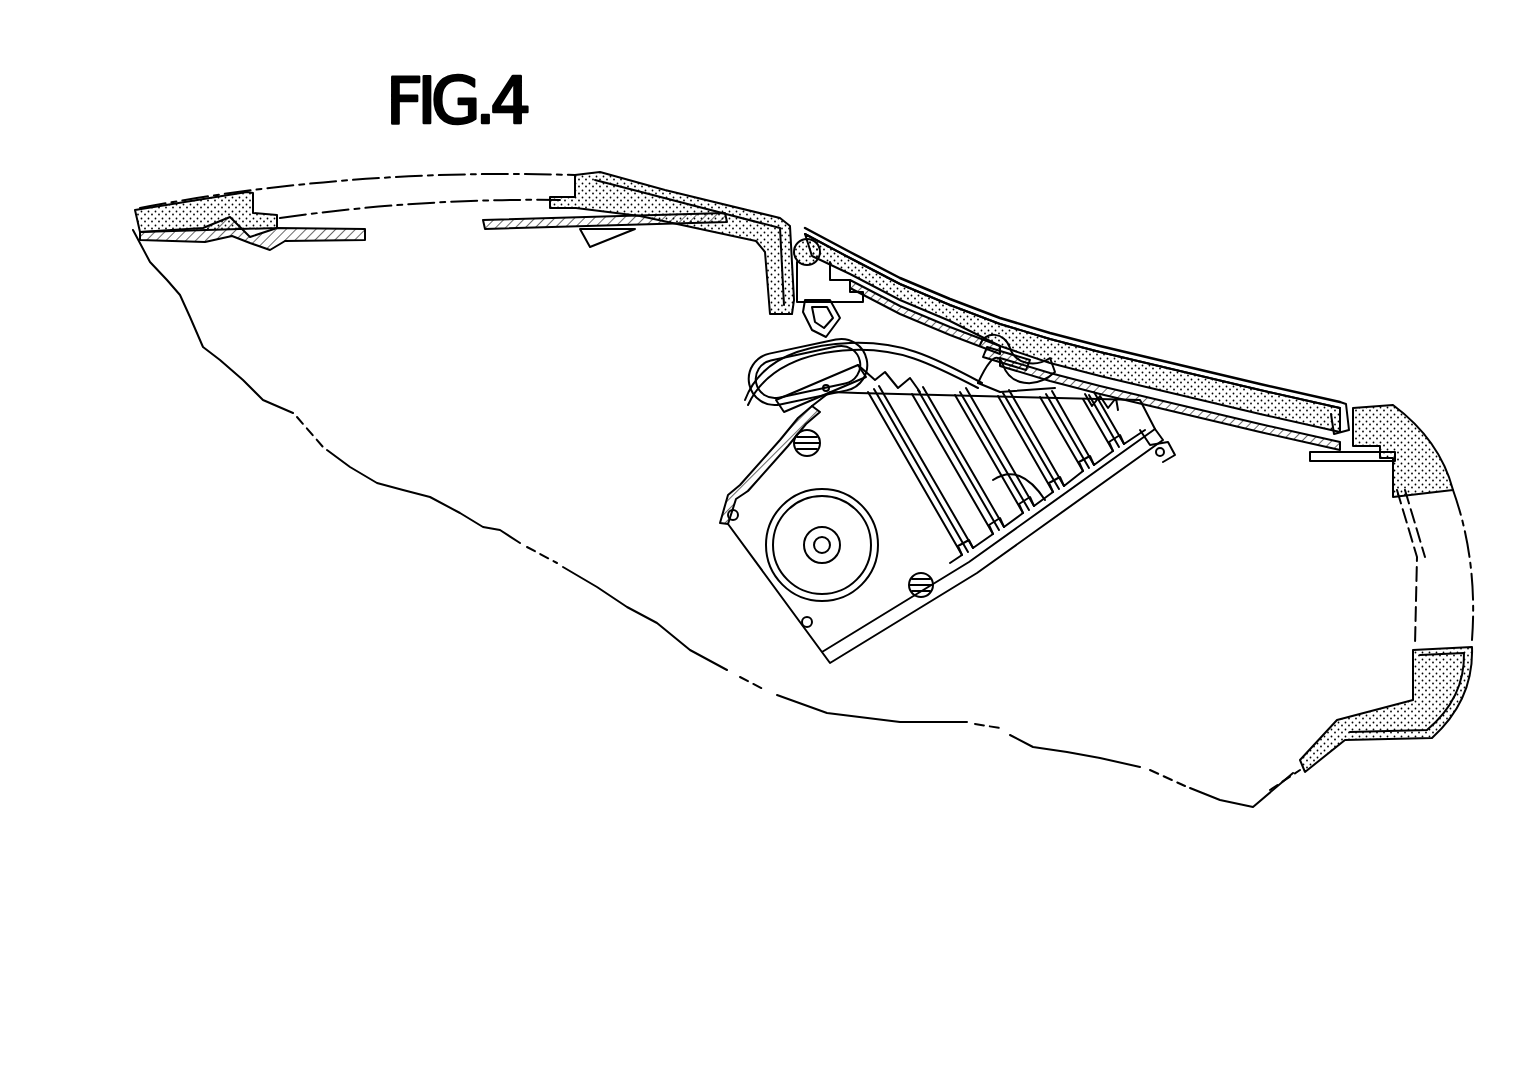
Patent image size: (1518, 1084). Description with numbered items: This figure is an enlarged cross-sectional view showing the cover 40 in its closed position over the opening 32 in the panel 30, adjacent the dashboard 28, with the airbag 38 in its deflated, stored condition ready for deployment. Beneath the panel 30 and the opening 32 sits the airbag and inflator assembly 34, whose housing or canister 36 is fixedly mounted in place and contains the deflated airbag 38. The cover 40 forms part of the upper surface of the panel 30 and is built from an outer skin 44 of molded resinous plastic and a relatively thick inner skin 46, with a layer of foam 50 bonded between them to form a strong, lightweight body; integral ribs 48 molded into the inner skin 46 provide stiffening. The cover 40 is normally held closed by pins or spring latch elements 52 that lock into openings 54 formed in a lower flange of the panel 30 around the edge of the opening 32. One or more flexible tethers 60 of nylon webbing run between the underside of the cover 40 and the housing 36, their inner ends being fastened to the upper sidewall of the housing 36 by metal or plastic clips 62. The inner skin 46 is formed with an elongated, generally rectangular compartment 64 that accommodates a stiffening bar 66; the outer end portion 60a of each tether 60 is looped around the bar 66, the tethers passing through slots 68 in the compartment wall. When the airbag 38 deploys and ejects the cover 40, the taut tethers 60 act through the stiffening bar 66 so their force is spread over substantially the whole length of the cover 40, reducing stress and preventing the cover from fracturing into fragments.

The dashboard 28 is at (1480, 550).
The panel 30 is at (740, 204).
The opening 32 is at (822, 252).
The airbag and inflator assembly 34 is at (952, 598).
The housing or canister 36 is at (730, 490).
The airbag 38 is at (1060, 505).
The cover 40 is at (982, 310).
The outer skin 44 is at (918, 290).
The inner skin 46 is at (1232, 424).
The integral ribs 48 is at (1190, 412).
The layer of foam 50 is at (1142, 360).
The pins or spring latch elements 52 is at (805, 322).
The openings 54 is at (840, 328).
The tethers 60 is at (752, 392).
The outer end portion 60a is at (947, 432).
The clips 62 is at (790, 427).
The compartment 64 is at (1085, 365).
The stiffening bar 66 is at (1035, 343).
The slots 68 is at (996, 476).